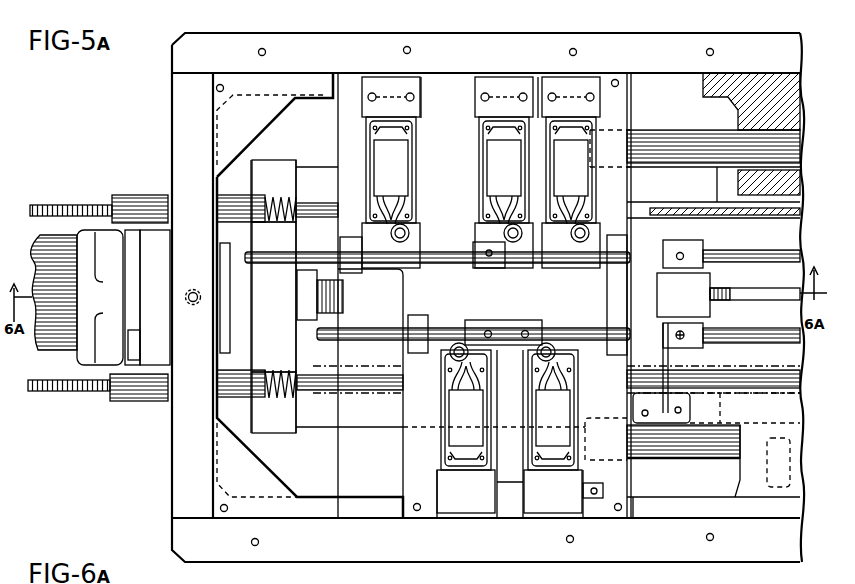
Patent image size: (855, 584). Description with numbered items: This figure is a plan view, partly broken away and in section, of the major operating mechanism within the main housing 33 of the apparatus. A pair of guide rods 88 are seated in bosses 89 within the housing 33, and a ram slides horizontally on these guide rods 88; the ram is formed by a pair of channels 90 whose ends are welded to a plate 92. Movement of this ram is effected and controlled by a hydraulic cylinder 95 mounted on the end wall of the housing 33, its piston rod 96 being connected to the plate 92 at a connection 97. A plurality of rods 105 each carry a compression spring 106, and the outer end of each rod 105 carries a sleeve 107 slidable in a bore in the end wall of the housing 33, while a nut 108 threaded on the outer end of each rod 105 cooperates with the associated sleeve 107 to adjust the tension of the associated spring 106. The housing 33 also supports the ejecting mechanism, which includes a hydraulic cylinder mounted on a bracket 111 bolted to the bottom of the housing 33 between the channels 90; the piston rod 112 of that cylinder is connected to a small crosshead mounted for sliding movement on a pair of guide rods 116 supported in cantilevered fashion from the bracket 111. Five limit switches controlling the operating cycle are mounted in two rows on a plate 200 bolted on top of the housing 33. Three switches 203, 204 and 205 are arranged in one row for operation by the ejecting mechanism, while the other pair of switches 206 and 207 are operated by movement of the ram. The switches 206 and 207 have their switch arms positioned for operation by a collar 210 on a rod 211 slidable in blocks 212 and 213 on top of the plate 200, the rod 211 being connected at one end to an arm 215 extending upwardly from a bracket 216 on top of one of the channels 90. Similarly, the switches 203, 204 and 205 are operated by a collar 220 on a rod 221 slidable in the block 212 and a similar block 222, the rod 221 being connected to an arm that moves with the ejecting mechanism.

The housing 33 is at (178, 107).
The plate 92 is at (252, 175).
The hydraulic cylinder 95 is at (55, 255).
The piston rod 96 is at (240, 307).
The connection 97 is at (300, 292).
The rod 105 is at (314, 203).
The compression spring 106 is at (278, 195).
The sleeve 107 is at (137, 195).
The nut 108 is at (103, 200).
The guide rod 88 is at (665, 140).
The boss 89 is at (752, 116).
The channel 90 is at (644, 182).
The bracket 111 is at (699, 262).
The piston rod 112 is at (735, 293).
The guide rod 116 is at (772, 258).
The plate 200 is at (440, 125).
The limit switch 203 is at (391, 172).
The limit switch 204 is at (504, 172).
The limit switch 205 is at (571, 172).
The limit switch 206 is at (466, 428).
The limit switch 207 is at (553, 428).
The collar 210 is at (522, 326).
The rod 211 is at (373, 338).
The block 212 is at (612, 292).
The block 213 is at (408, 347).
The arm 215 is at (692, 345).
The bracket 216 is at (662, 415).
The collar 220 is at (489, 268).
The rod 221 is at (440, 263).
The block 222 is at (355, 264).